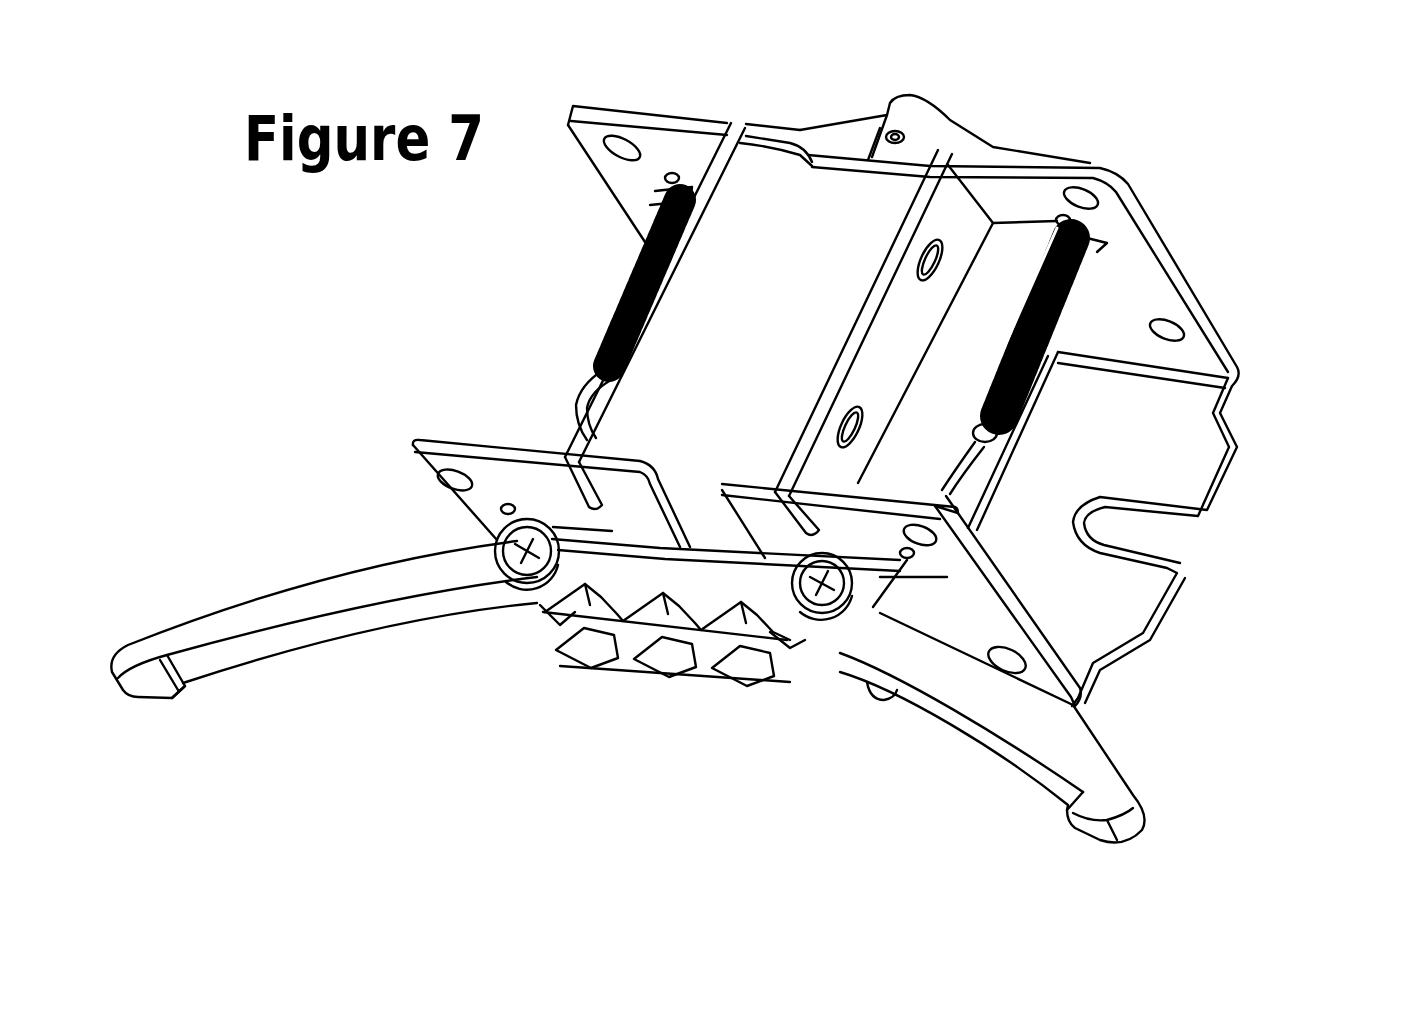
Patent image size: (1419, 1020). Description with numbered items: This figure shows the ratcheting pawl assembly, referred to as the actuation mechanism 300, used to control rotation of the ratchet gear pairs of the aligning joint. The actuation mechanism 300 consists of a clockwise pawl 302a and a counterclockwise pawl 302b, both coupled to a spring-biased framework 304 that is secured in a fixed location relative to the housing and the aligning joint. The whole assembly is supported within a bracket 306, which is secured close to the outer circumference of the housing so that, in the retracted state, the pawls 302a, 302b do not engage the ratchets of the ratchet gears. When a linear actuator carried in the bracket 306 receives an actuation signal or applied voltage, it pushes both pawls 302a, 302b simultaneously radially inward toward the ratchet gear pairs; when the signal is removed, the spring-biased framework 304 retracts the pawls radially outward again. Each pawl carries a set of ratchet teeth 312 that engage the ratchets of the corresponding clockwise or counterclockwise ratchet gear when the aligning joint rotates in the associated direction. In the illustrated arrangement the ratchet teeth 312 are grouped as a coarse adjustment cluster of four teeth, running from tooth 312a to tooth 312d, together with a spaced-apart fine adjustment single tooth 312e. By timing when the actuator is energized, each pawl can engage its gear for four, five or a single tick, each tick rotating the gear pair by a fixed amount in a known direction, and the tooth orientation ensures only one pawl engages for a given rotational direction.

The actuation mechanism 300 is at (931, 65).
The bracket 306 is at (1084, 148).
The spring-biased framework 304 is at (933, 445).
The clockwise pawl 302a is at (324, 576).
The counterclockwise pawl 302b is at (1080, 750).
The ratchet teeth 312 is at (554, 709).
The coarse adjustment tooth 312d is at (550, 626).
The coarse adjustment tooth 312a is at (776, 652).
The fine adjustment single tooth 312e is at (186, 713).